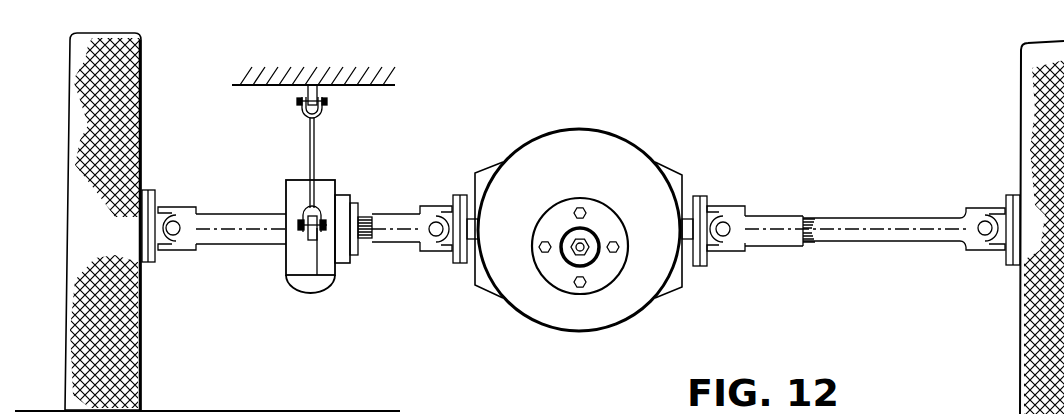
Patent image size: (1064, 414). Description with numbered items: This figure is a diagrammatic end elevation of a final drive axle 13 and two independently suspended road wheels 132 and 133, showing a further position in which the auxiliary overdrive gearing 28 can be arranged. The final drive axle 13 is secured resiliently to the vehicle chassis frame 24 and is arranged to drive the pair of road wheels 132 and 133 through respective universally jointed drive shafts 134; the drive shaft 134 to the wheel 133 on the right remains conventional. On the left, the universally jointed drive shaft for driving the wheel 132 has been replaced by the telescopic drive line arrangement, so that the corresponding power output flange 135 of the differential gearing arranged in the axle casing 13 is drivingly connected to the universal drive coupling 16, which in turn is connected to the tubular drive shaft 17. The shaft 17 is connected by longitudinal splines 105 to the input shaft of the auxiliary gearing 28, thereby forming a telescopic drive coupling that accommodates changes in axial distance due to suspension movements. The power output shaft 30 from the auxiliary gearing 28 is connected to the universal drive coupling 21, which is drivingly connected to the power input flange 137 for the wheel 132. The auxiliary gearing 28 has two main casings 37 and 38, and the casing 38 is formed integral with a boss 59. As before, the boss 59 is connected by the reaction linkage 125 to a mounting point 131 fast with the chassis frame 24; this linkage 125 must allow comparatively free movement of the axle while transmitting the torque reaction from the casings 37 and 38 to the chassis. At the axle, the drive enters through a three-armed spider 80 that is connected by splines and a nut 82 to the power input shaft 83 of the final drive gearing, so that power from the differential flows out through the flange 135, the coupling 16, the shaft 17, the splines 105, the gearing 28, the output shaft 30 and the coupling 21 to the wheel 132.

The final drive axle 13 is at (588, 175).
The universal drive coupling 16 is at (434, 235).
The tubular drive shaft 17 is at (406, 212).
The universal drive coupling 21 is at (175, 220).
The vehicle chassis frame 24 is at (393, 78).
The auxiliary gearing 28 is at (316, 302).
The power output shaft 30 is at (232, 213).
The casing 37 is at (336, 268).
The casing 38 is at (297, 262).
The boss 59 is at (307, 237).
The three-armed spider 80 is at (614, 235).
The nut 82 is at (588, 253).
The power input shaft 83 is at (568, 249).
The longitudinal splines 105 is at (368, 214).
The reaction linkage 125 is at (314, 165).
The mounting point 131 is at (320, 95).
The road wheel 132 is at (142, 70).
The road wheel 133 is at (1018, 306).
The universally jointed drive shaft 134 is at (858, 234).
The power output flange 135 is at (461, 265).
The power input flange 137 is at (148, 264).